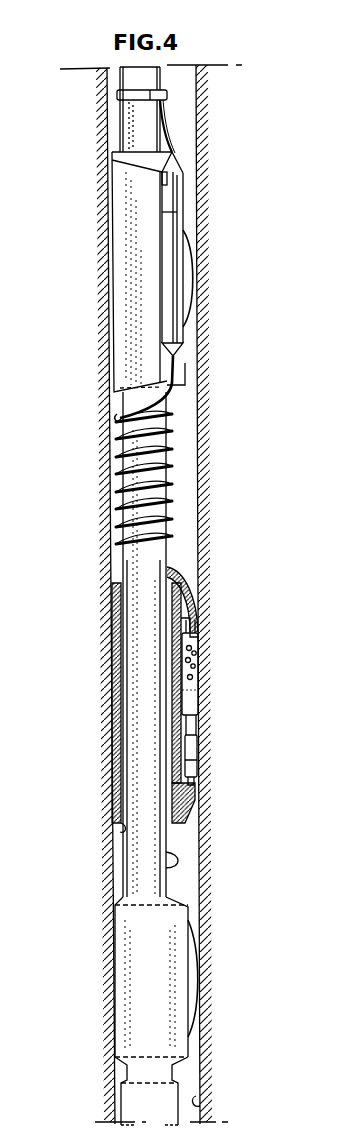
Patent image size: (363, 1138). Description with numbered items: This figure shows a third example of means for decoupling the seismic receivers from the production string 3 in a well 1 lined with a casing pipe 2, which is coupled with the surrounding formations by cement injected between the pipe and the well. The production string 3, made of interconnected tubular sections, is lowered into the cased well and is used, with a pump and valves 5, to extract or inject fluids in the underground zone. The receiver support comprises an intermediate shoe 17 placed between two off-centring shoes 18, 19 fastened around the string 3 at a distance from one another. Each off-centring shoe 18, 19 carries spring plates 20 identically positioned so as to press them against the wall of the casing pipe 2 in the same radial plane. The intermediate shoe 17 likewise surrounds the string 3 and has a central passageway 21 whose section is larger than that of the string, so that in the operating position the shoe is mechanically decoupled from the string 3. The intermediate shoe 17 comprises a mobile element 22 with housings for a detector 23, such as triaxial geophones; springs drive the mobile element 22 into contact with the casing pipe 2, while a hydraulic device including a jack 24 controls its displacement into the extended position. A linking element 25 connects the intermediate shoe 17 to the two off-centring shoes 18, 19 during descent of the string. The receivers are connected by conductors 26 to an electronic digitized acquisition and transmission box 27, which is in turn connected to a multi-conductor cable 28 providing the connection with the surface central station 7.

The well 1 is at (92, 511).
The casing pipe 2 is at (200, 1100).
The production string 3 is at (128, 562).
The valves 5 is at (204, 700).
The surface central station 7 is at (190, 940).
The intermediate shoe 17 is at (115, 720).
The off-centring shoe 18 is at (140, 252).
The off-centring shoe 19 is at (170, 1040).
The spring plates 20 is at (184, 238).
The central passageway 21 is at (125, 828).
The mobile element 22 is at (212, 626).
The detector 23 is at (194, 682).
The jack 24 is at (193, 760).
The linking element 25 is at (177, 862).
The conductors 26 is at (177, 574).
The electronic digitized acquisition and transmission box 27 is at (173, 308).
The multi-conductor cable 28 is at (163, 125).